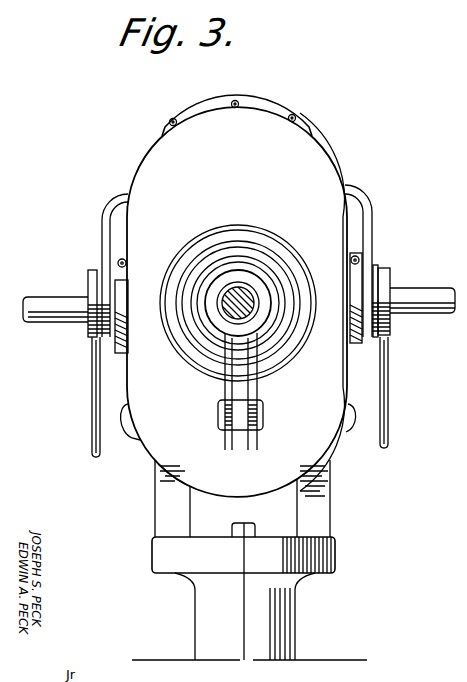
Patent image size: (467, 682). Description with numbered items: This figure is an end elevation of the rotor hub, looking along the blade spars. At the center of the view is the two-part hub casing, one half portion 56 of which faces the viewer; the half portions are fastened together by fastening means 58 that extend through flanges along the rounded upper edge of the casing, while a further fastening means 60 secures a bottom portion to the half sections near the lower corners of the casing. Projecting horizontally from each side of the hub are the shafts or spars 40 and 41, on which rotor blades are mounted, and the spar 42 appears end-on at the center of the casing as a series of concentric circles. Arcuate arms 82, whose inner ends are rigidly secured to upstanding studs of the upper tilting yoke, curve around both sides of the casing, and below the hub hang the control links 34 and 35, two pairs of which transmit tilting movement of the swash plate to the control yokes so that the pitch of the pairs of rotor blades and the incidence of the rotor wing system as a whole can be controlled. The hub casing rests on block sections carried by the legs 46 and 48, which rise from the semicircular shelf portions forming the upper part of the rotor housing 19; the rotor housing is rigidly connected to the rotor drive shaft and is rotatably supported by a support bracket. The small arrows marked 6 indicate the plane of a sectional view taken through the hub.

The section line 6- 6 is at (59, 500).
The rotor housing 19 is at (320, 557).
The control links 34 is at (242, 442).
The control links 35 is at (93, 415).
The shaft or spar 40 is at (42, 306).
The shaft or spar 41 is at (438, 286).
The shaft or spar 42 is at (244, 294).
The leg 46 is at (157, 527).
The leg 48 is at (318, 502).
The half portion of hub casing 56 is at (237, 302).
The fastening means 58 is at (265, 106).
The fastening means 60 is at (127, 428).
The arcuate arms 82 is at (103, 232).